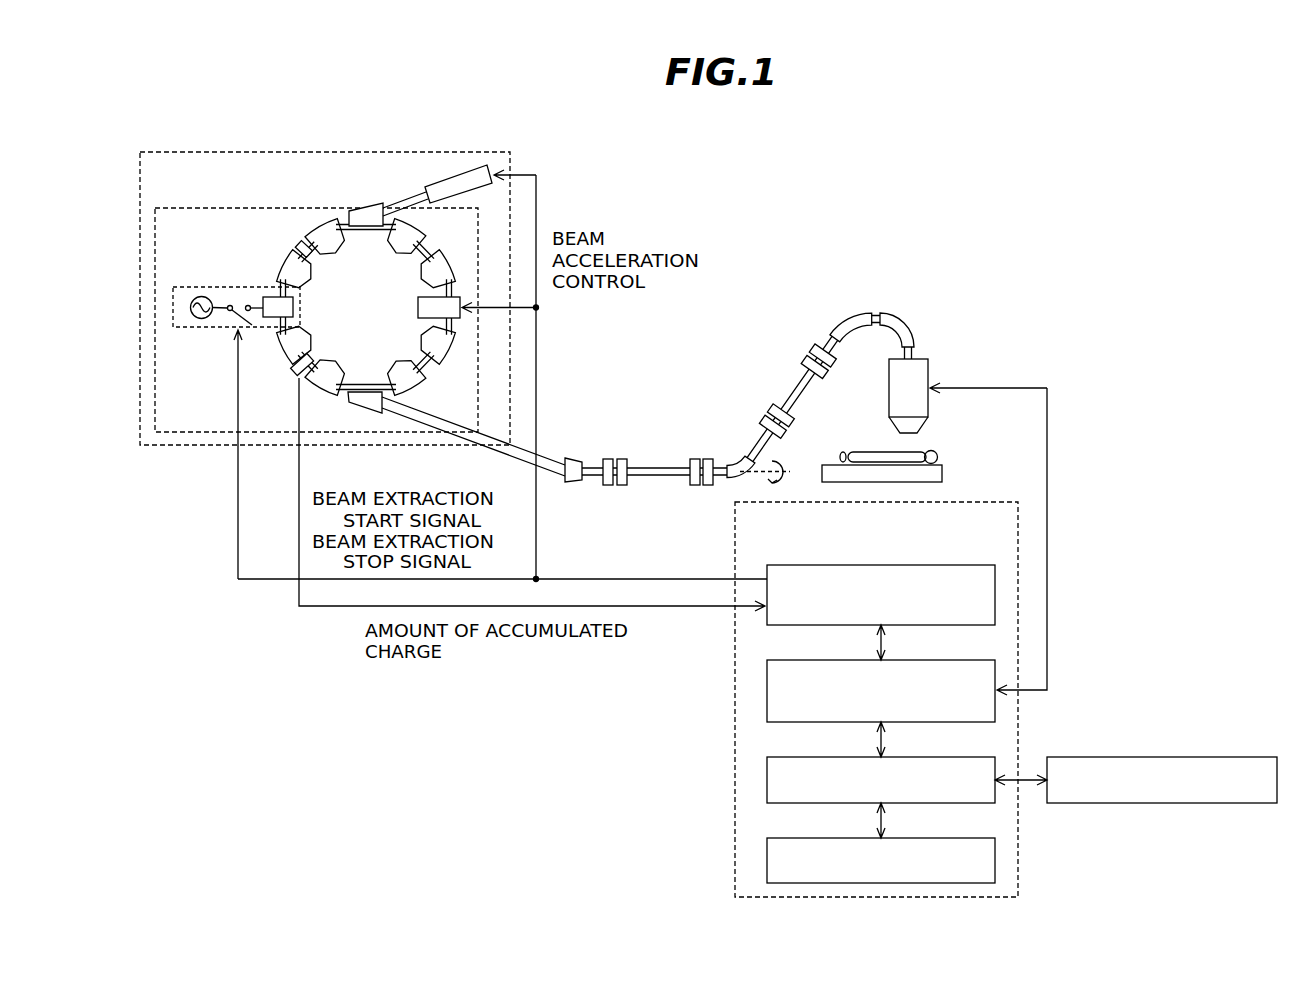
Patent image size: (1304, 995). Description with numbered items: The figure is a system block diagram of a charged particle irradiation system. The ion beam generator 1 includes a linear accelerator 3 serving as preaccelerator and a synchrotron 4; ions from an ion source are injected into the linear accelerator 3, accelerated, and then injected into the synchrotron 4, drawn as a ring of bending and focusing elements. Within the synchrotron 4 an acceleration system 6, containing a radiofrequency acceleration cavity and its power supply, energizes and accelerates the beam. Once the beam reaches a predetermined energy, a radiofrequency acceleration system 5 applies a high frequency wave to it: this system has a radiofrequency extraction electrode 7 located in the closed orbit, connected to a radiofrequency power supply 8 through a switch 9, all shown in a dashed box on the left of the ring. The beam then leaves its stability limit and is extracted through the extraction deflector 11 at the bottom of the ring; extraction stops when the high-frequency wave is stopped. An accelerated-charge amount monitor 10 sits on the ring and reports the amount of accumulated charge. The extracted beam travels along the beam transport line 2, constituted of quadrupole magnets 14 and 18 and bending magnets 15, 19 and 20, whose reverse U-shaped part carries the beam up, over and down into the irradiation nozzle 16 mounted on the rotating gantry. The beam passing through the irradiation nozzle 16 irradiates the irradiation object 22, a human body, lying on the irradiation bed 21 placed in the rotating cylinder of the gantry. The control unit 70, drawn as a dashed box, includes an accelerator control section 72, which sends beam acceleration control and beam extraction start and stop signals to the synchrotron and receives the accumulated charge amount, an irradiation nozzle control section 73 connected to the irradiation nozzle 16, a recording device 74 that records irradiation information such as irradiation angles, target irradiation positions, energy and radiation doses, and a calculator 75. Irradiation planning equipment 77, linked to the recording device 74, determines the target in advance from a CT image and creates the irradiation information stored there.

The ion beam generator 1 is at (242, 152).
The beam transport line 2 is at (511, 464).
The linear accelerator 3 is at (444, 178).
The synchrotron 4 is at (222, 208).
The radiofrequency acceleration system 5 is at (301, 307).
The acceleration system 6 is at (418, 307).
The radiofrequency extraction electrode 7 is at (276, 297).
The radiofrequency power supply 8 is at (201, 296).
The switch 9 is at (233, 303).
The accelerated-charge amount monitor 10 is at (294, 378).
The extraction deflector 11 is at (353, 412).
The quadrupole magnets 14 is at (613, 457).
The bending magnet 15 is at (736, 455).
The irradiation nozzle 16 is at (940, 366).
The quadrupole magnets 18 is at (766, 417).
The bending magnet 19 is at (852, 311).
The bending magnet 20 is at (911, 313).
The irradiation bed 21 is at (834, 462).
The irradiation object 22 is at (939, 452).
The control unit 70 is at (994, 502).
The accelerator control section 72 is at (766, 571).
The irradiation nozzle control section 73 is at (766, 690).
The recording device 74 is at (766, 780).
The calculator 75 is at (766, 862).
The irradiation planning equipment 77 is at (1227, 757).